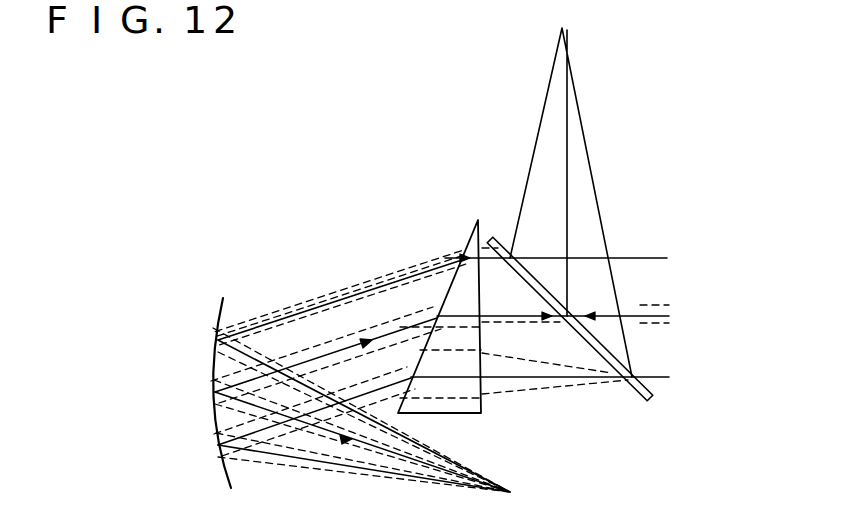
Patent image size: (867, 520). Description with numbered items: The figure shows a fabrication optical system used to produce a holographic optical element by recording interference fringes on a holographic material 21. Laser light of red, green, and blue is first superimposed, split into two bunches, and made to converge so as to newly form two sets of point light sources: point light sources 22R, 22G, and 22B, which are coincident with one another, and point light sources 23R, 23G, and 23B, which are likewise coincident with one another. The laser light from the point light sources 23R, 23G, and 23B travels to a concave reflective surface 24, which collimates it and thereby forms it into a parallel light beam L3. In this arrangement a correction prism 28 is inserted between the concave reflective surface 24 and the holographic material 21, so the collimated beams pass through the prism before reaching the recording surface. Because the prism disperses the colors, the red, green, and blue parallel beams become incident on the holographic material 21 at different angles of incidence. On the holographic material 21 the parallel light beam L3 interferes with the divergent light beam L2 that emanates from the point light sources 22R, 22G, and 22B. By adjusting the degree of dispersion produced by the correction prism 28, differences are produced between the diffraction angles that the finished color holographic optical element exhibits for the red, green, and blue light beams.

The holographic material 21 is at (636, 393).
The point light source 22R is at (648, 196).
The point light source 22G is at (648, 196).
The point light source 22B is at (563, 30).
The point light source 23R is at (473, 418).
The point light source 23G is at (473, 418).
The point light source 23B is at (510, 492).
The concave reflective surface 24 is at (218, 340).
The correction prism 28 is at (467, 248).
The divergent light beam L2 is at (588, 186).
The parallel light beam L3 is at (355, 305).